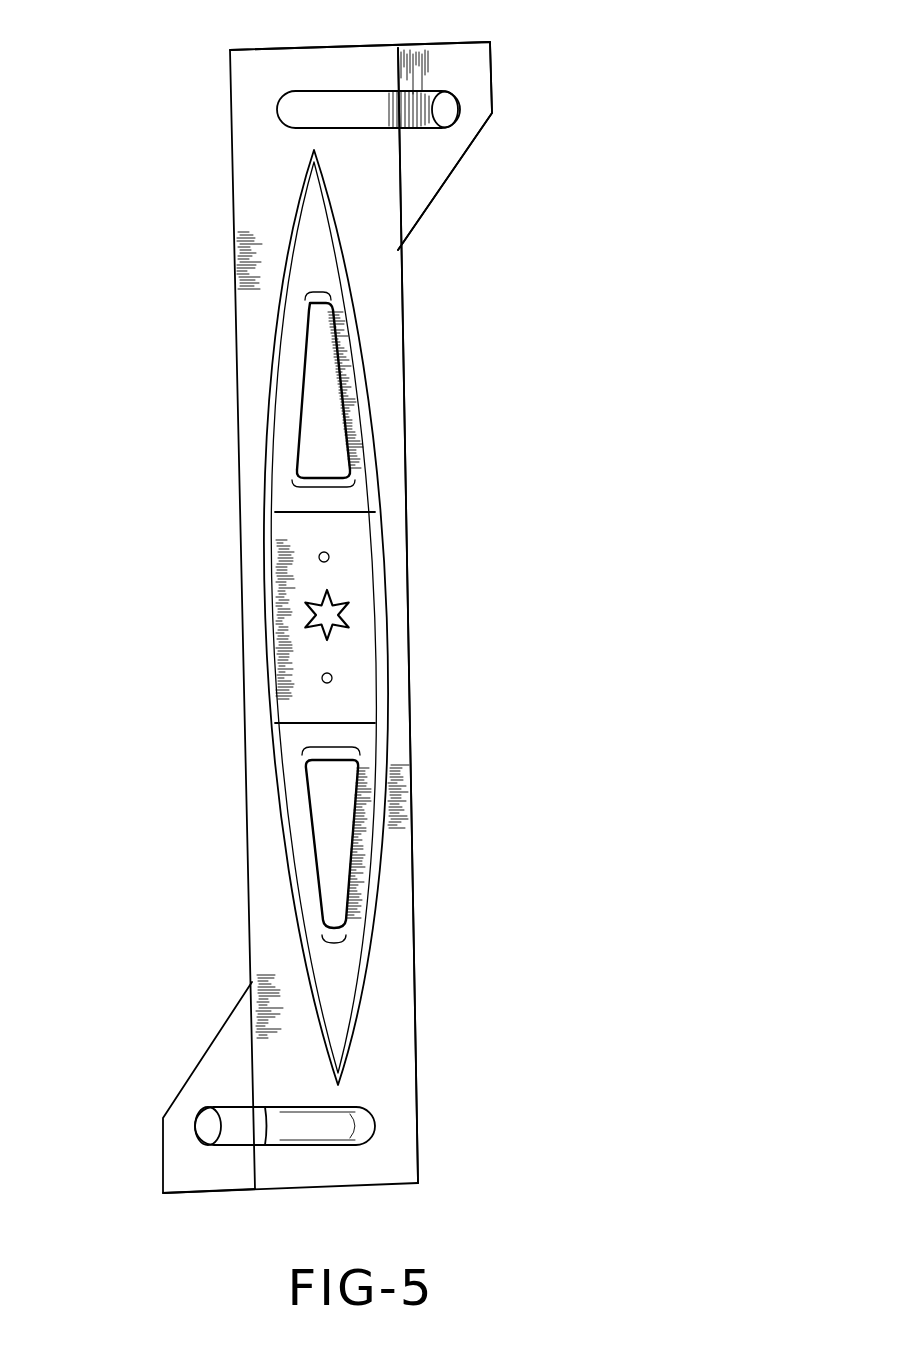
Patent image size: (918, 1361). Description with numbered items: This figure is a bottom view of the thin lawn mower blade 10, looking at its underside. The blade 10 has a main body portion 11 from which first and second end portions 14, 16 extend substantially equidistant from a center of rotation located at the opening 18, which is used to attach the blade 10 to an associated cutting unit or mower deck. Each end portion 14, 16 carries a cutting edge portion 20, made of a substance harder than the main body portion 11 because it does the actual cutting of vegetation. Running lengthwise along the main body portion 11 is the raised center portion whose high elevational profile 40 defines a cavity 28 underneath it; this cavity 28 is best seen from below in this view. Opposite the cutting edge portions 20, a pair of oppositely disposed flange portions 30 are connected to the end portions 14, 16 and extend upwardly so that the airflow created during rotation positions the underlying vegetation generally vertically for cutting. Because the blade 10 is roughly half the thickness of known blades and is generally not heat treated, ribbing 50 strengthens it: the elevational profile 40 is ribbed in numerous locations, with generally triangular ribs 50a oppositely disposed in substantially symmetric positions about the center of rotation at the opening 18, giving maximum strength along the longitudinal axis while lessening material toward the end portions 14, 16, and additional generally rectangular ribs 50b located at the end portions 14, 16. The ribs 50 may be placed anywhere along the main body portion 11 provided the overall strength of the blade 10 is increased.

The lawn mower blade 10 is at (587, 152).
The main body portion 11 is at (392, 450).
The first end portion 14 is at (322, 43).
The second end portion 16 is at (373, 1187).
The opening 18 is at (322, 617).
The cutting edge portion 20 is at (230, 88).
The cavity 28 is at (348, 704).
The flange portion 30 is at (458, 142).
The high elevational profile 40 is at (438, 602).
The ribbing 50 is at (330, 850).
The triangular ribs 50a is at (313, 448).
The rectangular ribs 50b is at (310, 108).